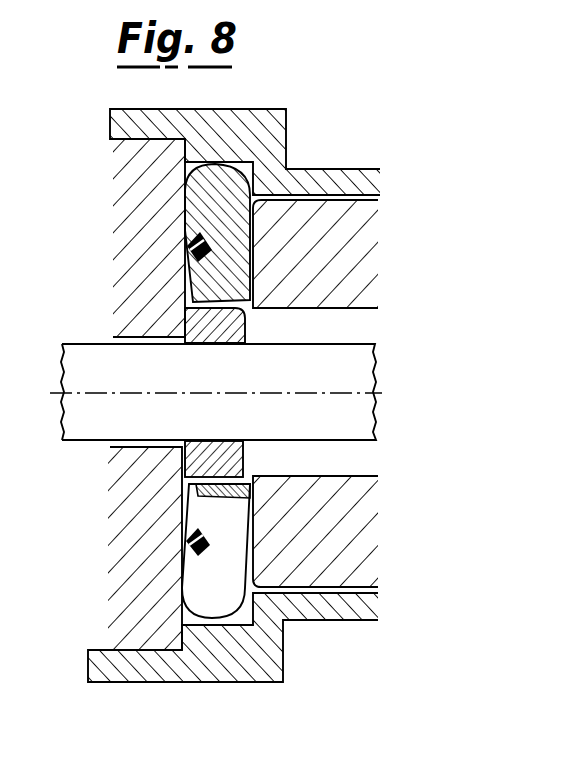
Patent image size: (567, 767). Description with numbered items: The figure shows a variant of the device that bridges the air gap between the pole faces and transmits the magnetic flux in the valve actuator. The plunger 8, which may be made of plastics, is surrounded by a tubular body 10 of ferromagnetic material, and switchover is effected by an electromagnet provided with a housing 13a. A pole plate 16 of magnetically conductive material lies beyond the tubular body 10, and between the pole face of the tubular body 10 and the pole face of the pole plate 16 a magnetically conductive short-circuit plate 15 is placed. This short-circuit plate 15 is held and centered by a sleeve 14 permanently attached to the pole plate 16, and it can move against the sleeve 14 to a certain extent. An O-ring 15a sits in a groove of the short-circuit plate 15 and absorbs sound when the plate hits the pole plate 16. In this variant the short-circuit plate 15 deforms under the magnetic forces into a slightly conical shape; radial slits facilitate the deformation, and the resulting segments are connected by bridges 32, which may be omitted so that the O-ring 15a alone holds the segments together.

The plunger 8 is at (343, 373).
The tubular body 10 is at (352, 258).
The housing 13a is at (287, 123).
The sleeve 14 is at (208, 455).
The magnetically conductive short-circuit plate 15 is at (208, 190).
The O-ring 15a is at (187, 248).
The pole plate 16 is at (167, 237).
The bridges 32 is at (197, 490).